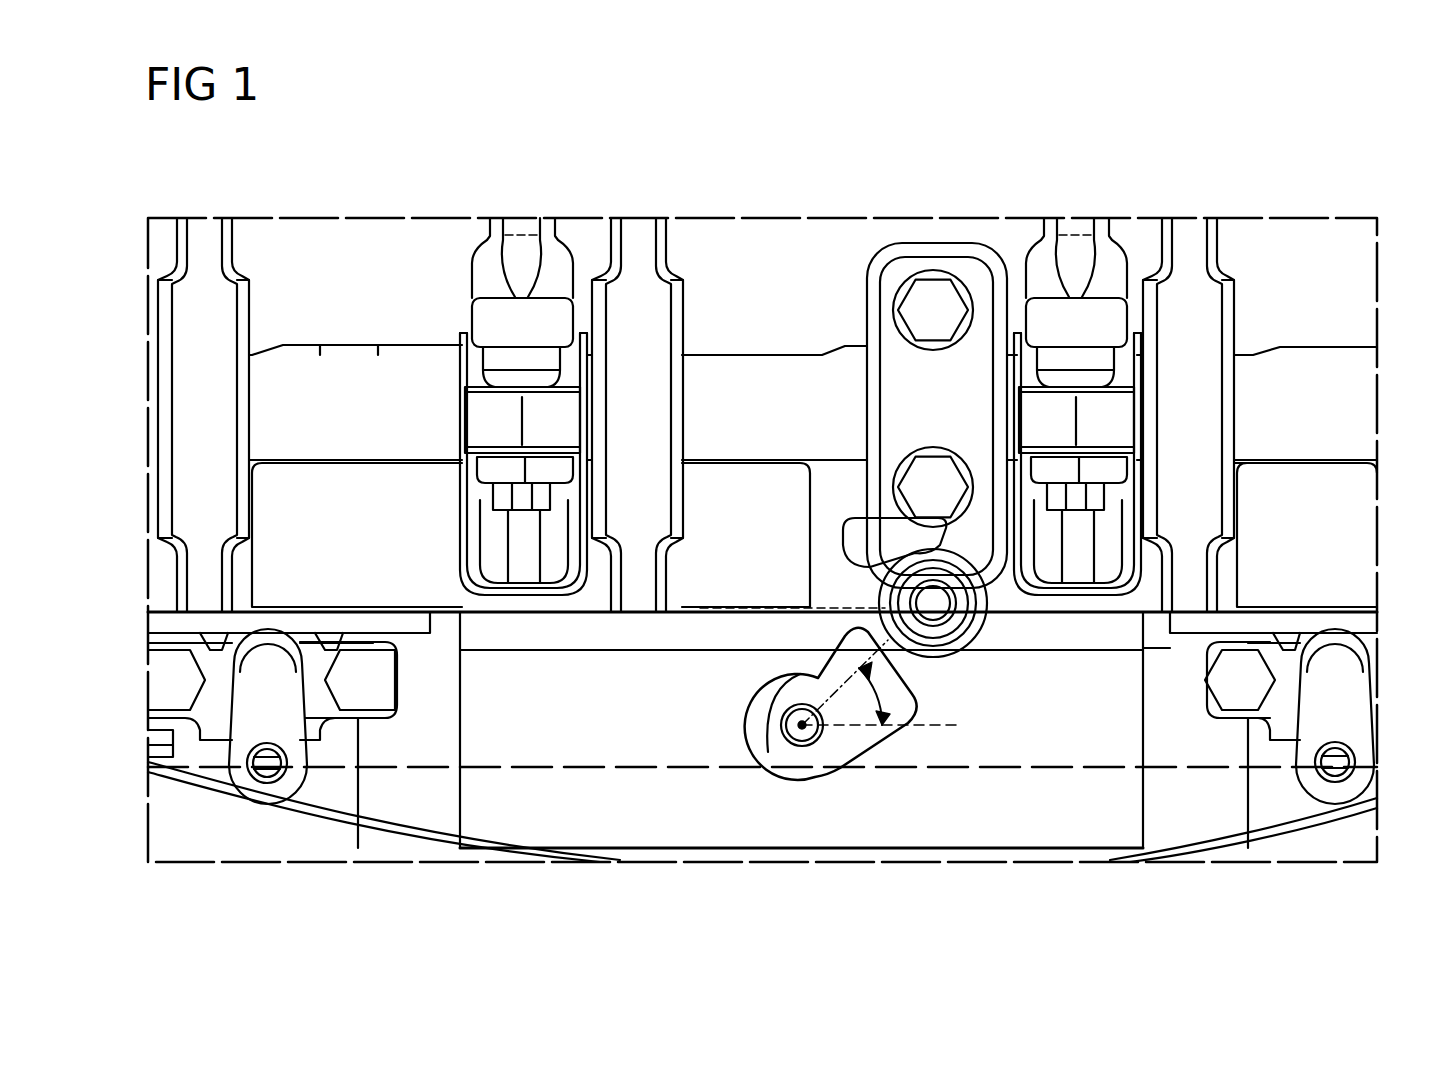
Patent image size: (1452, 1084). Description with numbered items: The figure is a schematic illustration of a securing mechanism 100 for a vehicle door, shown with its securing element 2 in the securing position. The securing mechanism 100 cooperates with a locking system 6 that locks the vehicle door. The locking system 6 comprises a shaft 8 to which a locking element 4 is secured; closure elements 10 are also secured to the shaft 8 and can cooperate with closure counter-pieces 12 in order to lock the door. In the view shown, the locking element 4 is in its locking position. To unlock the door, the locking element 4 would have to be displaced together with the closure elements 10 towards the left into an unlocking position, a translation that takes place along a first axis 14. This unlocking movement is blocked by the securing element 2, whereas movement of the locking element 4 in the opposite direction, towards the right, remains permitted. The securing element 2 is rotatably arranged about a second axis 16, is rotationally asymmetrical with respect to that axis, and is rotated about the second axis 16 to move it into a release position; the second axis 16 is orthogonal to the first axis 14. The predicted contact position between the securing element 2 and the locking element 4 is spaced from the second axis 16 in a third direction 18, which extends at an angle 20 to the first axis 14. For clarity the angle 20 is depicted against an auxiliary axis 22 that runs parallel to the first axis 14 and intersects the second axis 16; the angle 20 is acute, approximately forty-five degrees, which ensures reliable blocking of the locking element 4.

The securing mechanism 100 is at (915, 184).
The locking system 6 is at (845, 322).
The closure counter-pieces 12 is at (517, 327).
The closure elements 10 is at (541, 355).
The shaft 8 is at (1366, 418).
The first axis 14 is at (712, 607).
The securing element 2 is at (765, 747).
The second axis 16 is at (800, 737).
The third direction 18 is at (830, 680).
The angle 20 is at (868, 690).
The auxiliary axis 22 is at (920, 727).
The locking element 4 is at (980, 633).